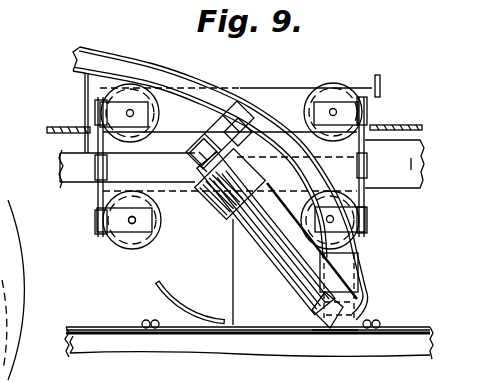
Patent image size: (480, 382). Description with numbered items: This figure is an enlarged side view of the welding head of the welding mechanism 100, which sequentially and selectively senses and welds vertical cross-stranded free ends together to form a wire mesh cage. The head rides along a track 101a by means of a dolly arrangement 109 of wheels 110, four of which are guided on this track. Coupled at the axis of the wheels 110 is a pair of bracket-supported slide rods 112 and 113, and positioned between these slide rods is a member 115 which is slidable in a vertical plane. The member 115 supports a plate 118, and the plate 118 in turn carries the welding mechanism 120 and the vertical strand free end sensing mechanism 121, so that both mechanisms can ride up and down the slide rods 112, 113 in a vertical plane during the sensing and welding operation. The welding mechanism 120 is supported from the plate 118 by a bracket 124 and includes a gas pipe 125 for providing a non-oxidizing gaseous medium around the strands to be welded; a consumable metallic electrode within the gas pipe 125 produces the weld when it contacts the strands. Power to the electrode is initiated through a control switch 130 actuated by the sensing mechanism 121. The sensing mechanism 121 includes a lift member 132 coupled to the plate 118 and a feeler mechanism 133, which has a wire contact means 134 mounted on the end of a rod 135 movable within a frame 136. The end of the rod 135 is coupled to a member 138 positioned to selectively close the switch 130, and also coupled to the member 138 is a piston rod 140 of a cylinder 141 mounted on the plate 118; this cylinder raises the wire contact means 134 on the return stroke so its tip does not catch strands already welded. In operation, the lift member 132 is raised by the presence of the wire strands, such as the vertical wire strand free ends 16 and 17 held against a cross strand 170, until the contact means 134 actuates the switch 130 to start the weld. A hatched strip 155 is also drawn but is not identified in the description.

The welding mechanism 100 is at (368, 58).
The gas pipe 125 is at (176, 77).
The wheels 110 is at (326, 84).
The rail strip 155 is at (52, 126).
The control switch 130 is at (240, 118).
The cylinder 141 is at (252, 128).
The slide rod 112 is at (70, 152).
The piston rod 140 is at (205, 160).
The member 115 is at (343, 163).
The track 101a is at (70, 184).
The member 138 is at (188, 187).
The dolly arrangement 109 is at (117, 233).
The vertical strand free end sensing mechanism 121 is at (217, 228).
The plate 118 is at (276, 226).
The frame 136 is at (246, 240).
The feeler mechanism 133 is at (309, 294).
The rod 135 is at (298, 258).
The slide rod 113 is at (372, 207).
The welding mechanism 120 is at (364, 279).
The bracket 124 is at (350, 285).
The cross strand 170 is at (176, 334).
The lift member 132 is at (252, 333).
The wire contact means 134 is at (322, 340).
The vertical wire strand free ends 16 is at (367, 329).
The vertical wire strand free ends 17 is at (379, 329).